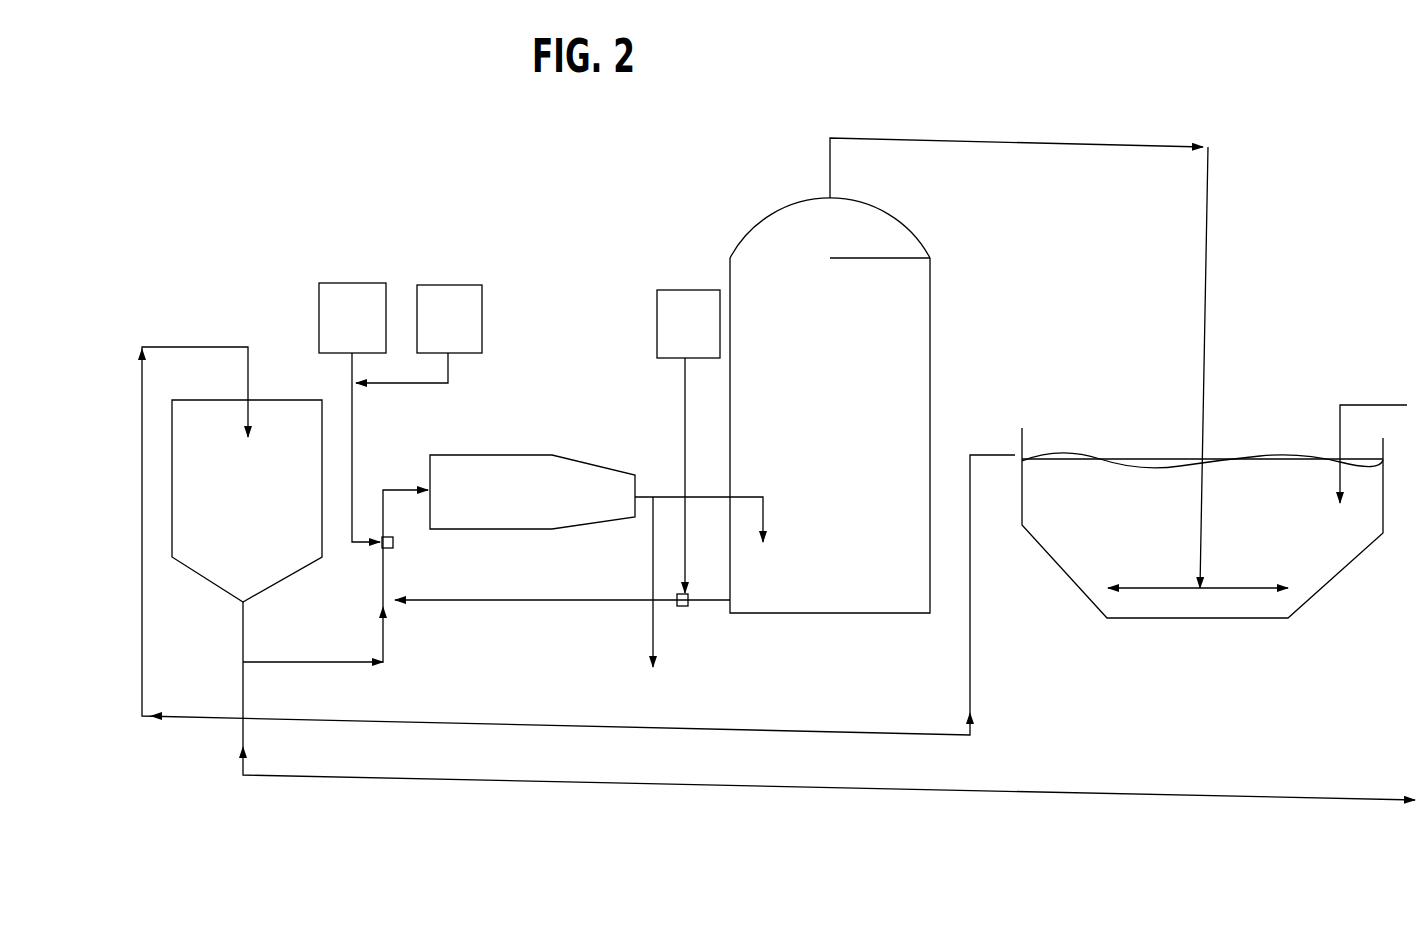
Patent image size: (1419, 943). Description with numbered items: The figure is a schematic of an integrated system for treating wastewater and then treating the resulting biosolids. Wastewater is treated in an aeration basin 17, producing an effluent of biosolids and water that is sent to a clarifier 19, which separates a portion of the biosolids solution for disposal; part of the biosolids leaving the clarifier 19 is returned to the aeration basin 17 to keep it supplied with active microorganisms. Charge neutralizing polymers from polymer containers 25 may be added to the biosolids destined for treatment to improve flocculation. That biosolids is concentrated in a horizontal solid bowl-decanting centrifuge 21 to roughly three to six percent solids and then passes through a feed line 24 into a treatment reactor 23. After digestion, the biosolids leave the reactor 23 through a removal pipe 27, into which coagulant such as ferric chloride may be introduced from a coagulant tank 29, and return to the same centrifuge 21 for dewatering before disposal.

The aeration basin 17 is at (1113, 442).
The clarifier 19 is at (290, 393).
The horizontal solid bowl-decanting centrifuge 21 is at (515, 452).
The treatment reactor 23 is at (935, 318).
The feed line 24 is at (668, 491).
The polymer containers 25 is at (453, 282).
The removal pipe 27 is at (508, 604).
The coagulant tank 29 is at (690, 286).